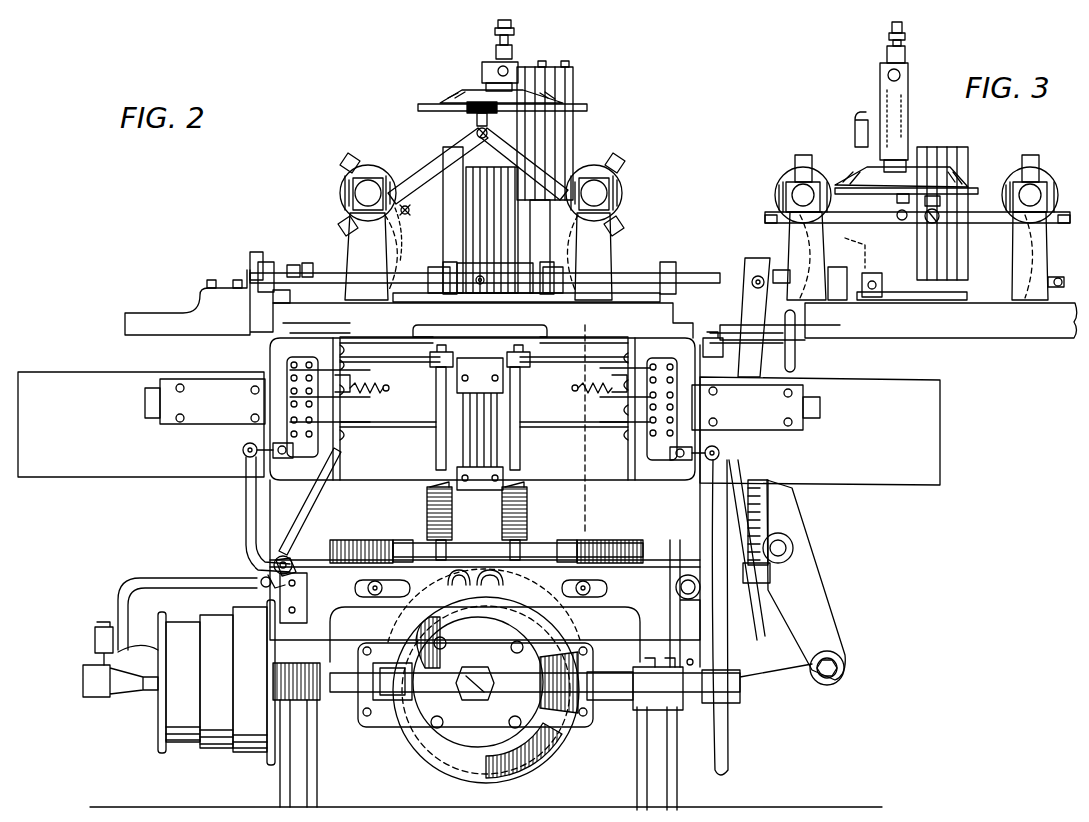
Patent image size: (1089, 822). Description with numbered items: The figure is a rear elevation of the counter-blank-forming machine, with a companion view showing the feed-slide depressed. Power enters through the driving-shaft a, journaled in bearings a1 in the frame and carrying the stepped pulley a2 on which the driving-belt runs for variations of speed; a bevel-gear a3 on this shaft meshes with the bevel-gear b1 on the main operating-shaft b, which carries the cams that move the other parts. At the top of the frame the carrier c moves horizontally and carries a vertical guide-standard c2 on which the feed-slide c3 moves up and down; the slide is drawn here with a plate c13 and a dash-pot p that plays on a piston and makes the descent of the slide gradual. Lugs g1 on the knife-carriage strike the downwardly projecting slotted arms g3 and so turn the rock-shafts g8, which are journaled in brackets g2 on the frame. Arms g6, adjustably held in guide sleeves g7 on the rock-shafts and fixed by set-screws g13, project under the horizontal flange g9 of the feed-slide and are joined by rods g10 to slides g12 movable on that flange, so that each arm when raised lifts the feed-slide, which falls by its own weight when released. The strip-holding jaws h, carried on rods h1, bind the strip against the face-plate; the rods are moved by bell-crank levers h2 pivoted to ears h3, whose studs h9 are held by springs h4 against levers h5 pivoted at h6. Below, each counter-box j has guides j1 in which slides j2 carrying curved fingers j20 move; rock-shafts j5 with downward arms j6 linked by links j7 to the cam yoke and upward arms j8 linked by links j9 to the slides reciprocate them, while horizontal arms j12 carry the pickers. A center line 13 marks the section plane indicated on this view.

In FIG. 2, the lug g1 is at (250, 258).
In FIG. 2, the bracket g2 is at (345, 260).
In FIG. 2, the slotted arm g3 is at (352, 242).
In FIG. 2, the arm g6 is at (422, 166).
In FIG. 3, the arm g6 is at (983, 222).
In FIG. 2, the guide sleeve g7 is at (412, 186).
In FIG. 3, the guide sleeve g7 is at (790, 232).
In FIG. 2, the rock-shaft g8 is at (353, 196).
In FIG. 3, the rock-shaft g8 is at (800, 196).
In FIG. 2, the horizontal flange g9 is at (420, 108).
In FIG. 3, the horizontal flange g9 is at (968, 190).
In FIG. 2, the rod g10 is at (478, 120).
In FIG. 3, the rod g10 is at (898, 206).
In FIG. 2, the slide g12 is at (470, 100).
In FIG. 3, the slide g12 is at (948, 190).
In FIG. 2, the set-screw g13 is at (408, 212).
In FIG. 3, the carrier c is at (912, 297).
In FIG. 2, the vertical guide-standard c2 is at (510, 225).
In FIG. 3, the vertical guide-standard c2 is at (898, 112).
In FIG. 2, the feed-slide c3 is at (560, 135).
In FIG. 3, the feed-slide c3 is at (912, 254).
In FIG. 2, the plate c13 is at (528, 300).
In FIG. 2, the strip-holding jaw h is at (480, 597).
In FIG. 2, the rod h1 is at (430, 358).
In FIG. 2, the bell-crank lever h2 is at (436, 414).
In FIG. 2, the ear h3 is at (400, 550).
In FIG. 2, the spring h4 is at (427, 512).
In FIG. 2, the lever h5 is at (484, 631).
In FIG. 2, the pivot h6 is at (363, 590).
In FIG. 2, the stud h9 is at (484, 605).
In FIG. 2, the counter-box j is at (106, 468).
In FIG. 2, the guide j1 is at (205, 420).
In FIG. 2, the slide j2 is at (820, 410).
In FIG. 2, the rock-shaft j5 is at (722, 588).
In FIG. 2, the downwardly-projecting arm j6 is at (700, 632).
In FIG. 2, the link j7 is at (630, 662).
In FIG. 2, the upwardly-projecting arm j8 is at (246, 517).
In FIG. 2, the link j9 is at (248, 443).
In FIG. 2, the horizontal arm j12 is at (148, 410).
In FIG. 2, the curved finger j20 is at (482, 408).
In FIG. 2, the driving-shaft a is at (357, 684).
In FIG. 2, the bearing a1 is at (660, 670).
In FIG. 2, the stepped pulley a2 is at (222, 742).
In FIG. 2, the bevel-gear a3 is at (475, 690).
In FIG. 2, the main operating-shaft b is at (484, 698).
In FIG. 2, the bevel-gear b1 is at (523, 773).
In FIG. 3, the dash-pot p is at (957, 253).
In FIG. 2, the center line 13 is at (589, 430).